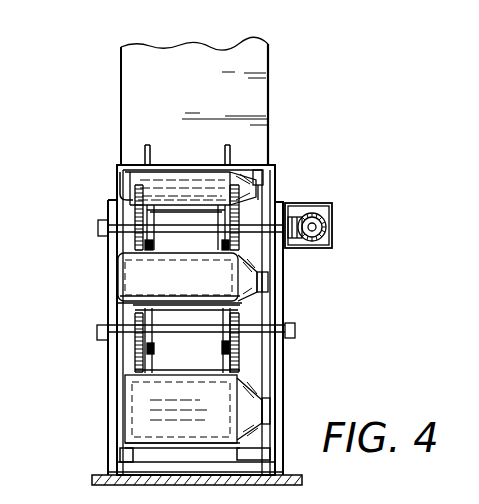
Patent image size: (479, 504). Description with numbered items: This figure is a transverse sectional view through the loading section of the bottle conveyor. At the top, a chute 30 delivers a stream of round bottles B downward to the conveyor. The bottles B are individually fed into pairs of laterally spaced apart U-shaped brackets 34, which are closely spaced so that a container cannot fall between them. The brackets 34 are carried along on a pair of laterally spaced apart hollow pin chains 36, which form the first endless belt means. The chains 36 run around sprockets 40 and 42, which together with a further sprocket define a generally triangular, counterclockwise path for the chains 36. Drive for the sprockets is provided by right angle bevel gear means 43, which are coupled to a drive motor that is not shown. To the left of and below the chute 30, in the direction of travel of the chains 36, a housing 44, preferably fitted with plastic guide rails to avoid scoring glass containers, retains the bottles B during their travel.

The chute 30 is at (258, 65).
The U-shaped bracket 34 is at (230, 155).
The hollow pin chain 36 is at (133, 317).
The sprocket 40 is at (137, 350).
The sprocket 42 is at (140, 235).
The right angle bevel gear means 43 is at (303, 218).
The housing 44 is at (158, 422).
The bottle B is at (138, 180).